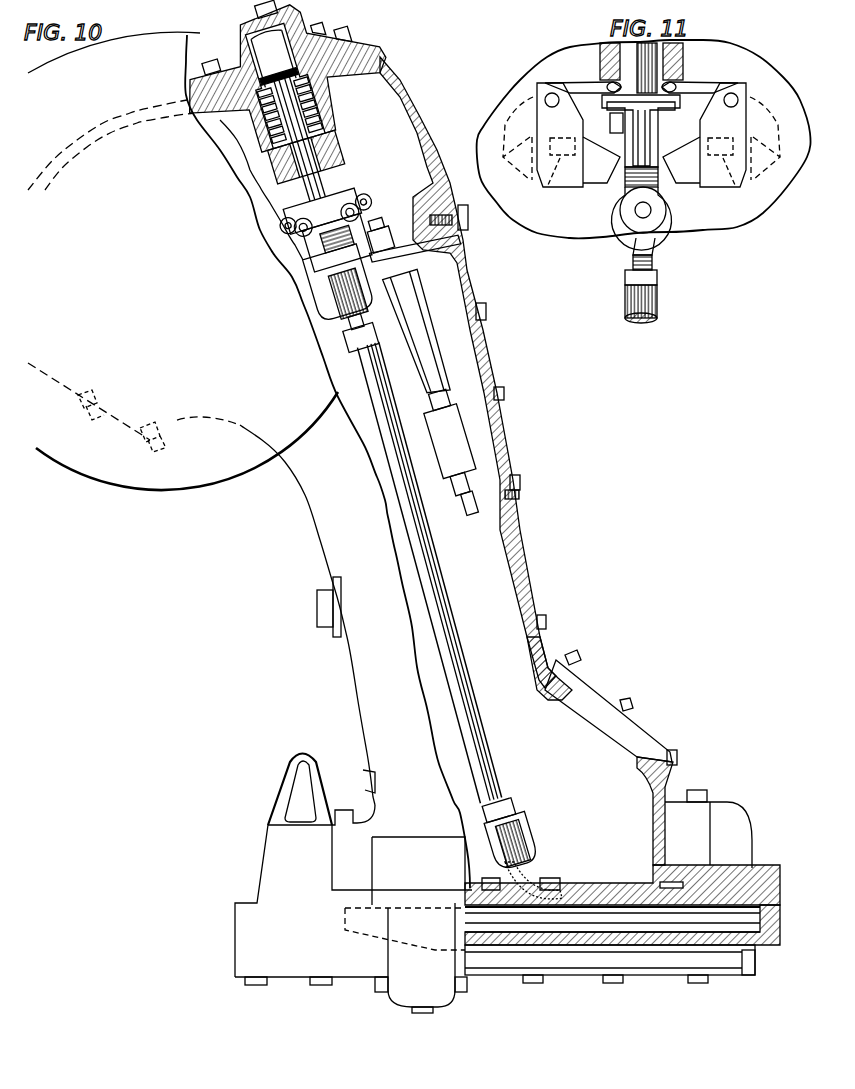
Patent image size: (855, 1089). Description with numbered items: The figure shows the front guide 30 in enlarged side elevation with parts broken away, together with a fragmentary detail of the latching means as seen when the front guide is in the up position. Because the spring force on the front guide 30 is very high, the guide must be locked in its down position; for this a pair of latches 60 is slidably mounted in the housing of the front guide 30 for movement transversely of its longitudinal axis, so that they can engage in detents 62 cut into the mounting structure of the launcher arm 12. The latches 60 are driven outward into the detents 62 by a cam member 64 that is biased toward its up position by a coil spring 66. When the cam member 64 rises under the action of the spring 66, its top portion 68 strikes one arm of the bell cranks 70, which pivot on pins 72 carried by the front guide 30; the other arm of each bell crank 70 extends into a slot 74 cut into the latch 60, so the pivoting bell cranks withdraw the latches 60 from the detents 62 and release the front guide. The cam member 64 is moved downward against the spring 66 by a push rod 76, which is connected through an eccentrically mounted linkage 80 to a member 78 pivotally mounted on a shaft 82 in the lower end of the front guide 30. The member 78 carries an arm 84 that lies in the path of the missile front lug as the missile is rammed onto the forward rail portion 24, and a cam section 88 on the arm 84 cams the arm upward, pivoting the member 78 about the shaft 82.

In FIG. 10, the launcher arm 12 is at (173, 493).
In FIG. 11, the launcher arm 12 is at (508, 207).
In FIG. 10, the forward rail portion 24 is at (574, 955).
In FIG. 10, the front guide 30 is at (497, 362).
In FIG. 11, the latches 60 is at (598, 180).
In FIG. 11, the detents 62 is at (648, 135).
In FIG. 10, the cam member 64 is at (352, 232).
In FIG. 11, the cam member 64 is at (624, 182).
In FIG. 10, the coil spring 66 is at (314, 121).
In FIG. 10, the top portion 68 is at (343, 190).
In FIG. 11, the top portion 68 is at (608, 92).
In FIG. 11, the bell cranks 70 is at (577, 80).
In FIG. 11, the pins 72 is at (549, 93).
In FIG. 11, the slots 74 is at (553, 172).
In FIG. 10, the push rod 76 is at (445, 598).
In FIG. 11, the push rod 76 is at (660, 306).
In FIG. 10, the member 78 is at (727, 908).
In FIG. 10, the eccentrically mounted linkage 80 is at (541, 866).
In FIG. 10, the shaft 82 is at (695, 925).
In FIG. 10, the arm 84 is at (438, 950).
In FIG. 10, the cam section 88 is at (368, 937).